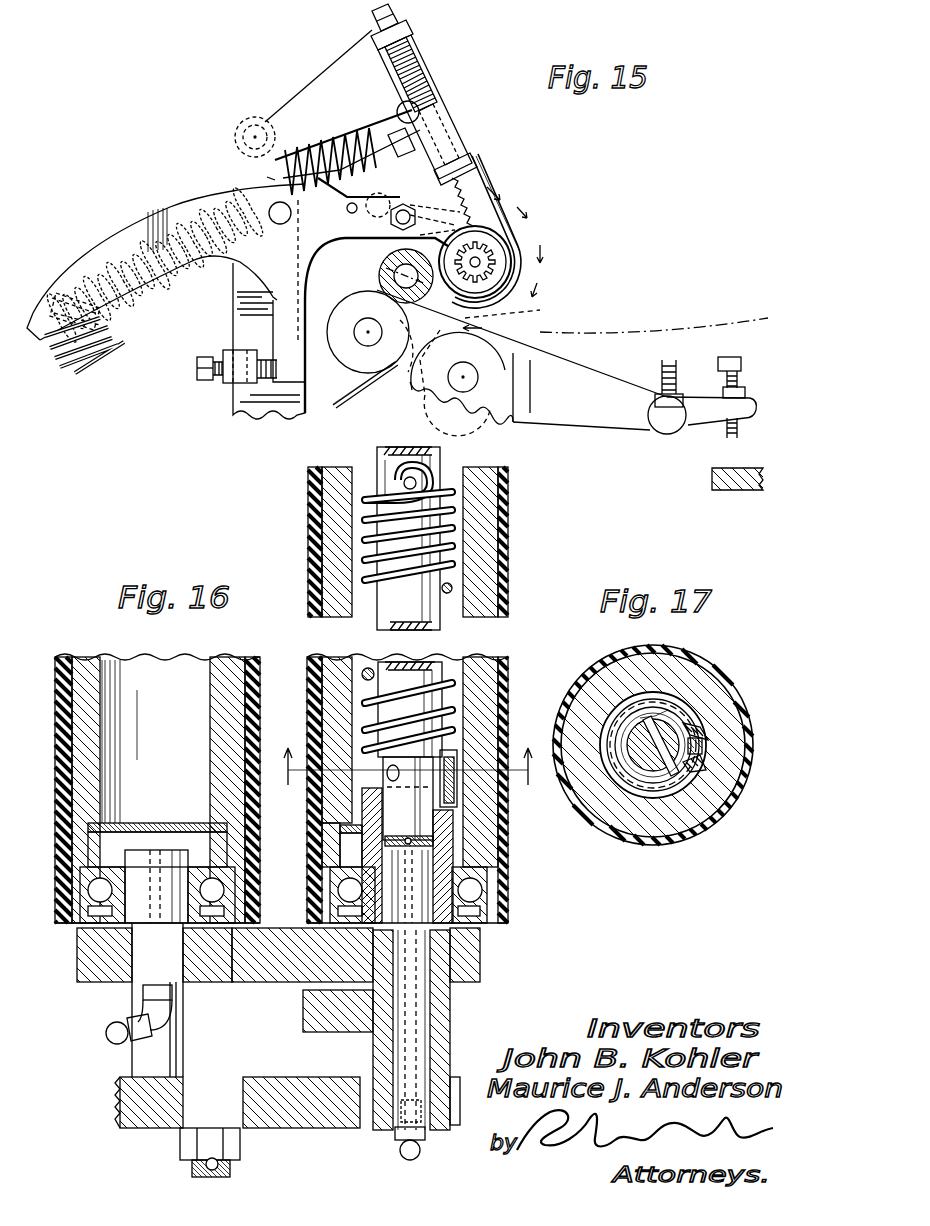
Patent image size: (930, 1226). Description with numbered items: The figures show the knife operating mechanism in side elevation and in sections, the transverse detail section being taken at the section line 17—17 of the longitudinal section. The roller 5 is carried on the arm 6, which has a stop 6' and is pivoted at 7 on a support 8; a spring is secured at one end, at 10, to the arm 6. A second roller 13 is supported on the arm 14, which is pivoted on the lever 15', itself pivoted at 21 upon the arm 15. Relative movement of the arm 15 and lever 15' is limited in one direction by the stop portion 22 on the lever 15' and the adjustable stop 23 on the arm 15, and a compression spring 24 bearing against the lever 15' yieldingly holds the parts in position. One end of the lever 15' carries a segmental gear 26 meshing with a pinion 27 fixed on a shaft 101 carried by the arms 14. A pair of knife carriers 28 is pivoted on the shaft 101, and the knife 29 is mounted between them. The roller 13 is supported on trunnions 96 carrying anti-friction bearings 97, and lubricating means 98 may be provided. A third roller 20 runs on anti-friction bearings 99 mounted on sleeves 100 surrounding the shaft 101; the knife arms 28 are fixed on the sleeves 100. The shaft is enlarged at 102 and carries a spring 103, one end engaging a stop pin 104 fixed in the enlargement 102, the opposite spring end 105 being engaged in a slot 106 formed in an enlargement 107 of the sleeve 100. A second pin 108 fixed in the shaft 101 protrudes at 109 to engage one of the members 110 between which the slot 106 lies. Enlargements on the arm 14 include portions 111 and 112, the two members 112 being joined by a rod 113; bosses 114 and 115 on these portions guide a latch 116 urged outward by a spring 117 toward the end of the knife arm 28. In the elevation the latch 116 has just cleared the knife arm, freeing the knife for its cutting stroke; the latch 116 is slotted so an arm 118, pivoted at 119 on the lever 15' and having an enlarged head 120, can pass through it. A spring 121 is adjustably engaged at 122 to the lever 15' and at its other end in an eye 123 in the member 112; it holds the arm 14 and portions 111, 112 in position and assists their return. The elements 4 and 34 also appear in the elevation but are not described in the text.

In FIG. 15, the roller 4 is at (384, 278).
In FIG. 15, the roller 5 is at (333, 317).
In FIG. 15, the arm 6 is at (566, 364).
In FIG. 15, the stop 6' is at (739, 467).
In FIG. 15, the pivot 7 is at (465, 374).
In FIG. 15, the support 8 is at (423, 413).
In FIG. 15, the spring attachment point 10 is at (667, 413).
In FIG. 15, the second roller 13 is at (356, 258).
In FIG. 16, the second roller 13 is at (87, 660).
In FIG. 15, the arm 14 is at (442, 240).
In FIG. 16, the arm 14 is at (280, 975).
In FIG. 15, the arm 15 is at (242, 341).
In FIG. 15, the lever 15' is at (166, 257).
In FIG. 16, the lever 15' is at (200, 1102).
In FIG. 16, the section line 17 is at (288, 786).
In FIG. 16, the third roller 20 is at (508, 578).
In FIG. 17, the third roller 20 is at (732, 807).
In FIG. 15, the pivot 21 is at (276, 226).
In FIG. 15, the stop portion 22 is at (320, 378).
In FIG. 15, the adjustable stop 23 is at (217, 377).
In FIG. 15, the compression spring 24 is at (78, 375).
In FIG. 15, the segmental gear 26 is at (463, 187).
In FIG. 16, the segmental gear 26 is at (352, 1115).
In FIG. 15, the pinion 27 is at (512, 258).
In FIG. 16, the pinion 27 is at (443, 1125).
In FIG. 15, the knife carrier 28 is at (482, 226).
In FIG. 16, the knife carrier 28 is at (325, 1022).
In FIG. 15, the knife 29 is at (480, 181).
In FIG. 15, the bar 34 is at (490, 160).
In FIG. 16, the trunnion 96 is at (155, 853).
In FIG. 16, the anti-friction bearing 97 is at (98, 887).
In FIG. 16, the lubricating means 98 is at (107, 1030).
In FIG. 16, the anti-friction bearing 99 is at (500, 920).
In FIG. 16, the sleeve 100 is at (482, 948).
In FIG. 16, the shaft 101 is at (420, 1046).
In FIG. 17, the shaft 101 is at (630, 662).
In FIG. 16, the shaft enlargement 102 is at (418, 677).
In FIG. 16, the spring 103 is at (447, 541).
In FIG. 17, the spring 103 is at (653, 772).
In FIG. 16, the stop pin 104 is at (412, 480).
In FIG. 16, the spring end 105 is at (455, 772).
In FIG. 17, the spring end 105 is at (700, 745).
In FIG. 16, the slot 106 is at (457, 805).
In FIG. 17, the slot 106 is at (672, 707).
In FIG. 16, the sleeve enlargement 107 is at (448, 842).
In FIG. 17, the sleeve enlargement 107 is at (695, 840).
In FIG. 16, the second pin 108 is at (390, 775).
In FIG. 17, the second pin 108 is at (642, 755).
In FIG. 16, the protruding pin end 109 is at (367, 668).
In FIG. 17, the protruding pin end 109 is at (648, 790).
In FIG. 17, the member 110 is at (694, 721).
In FIG. 15, the portion 111 is at (398, 147).
In FIG. 15, the portion 112 is at (306, 76).
In FIG. 15, the rod 113 is at (240, 118).
In FIG. 15, the boss 114 is at (410, 27).
In FIG. 15, the boss 115 is at (440, 173).
In FIG. 15, the latch 116 is at (445, 113).
In FIG. 15, the spring 117 is at (430, 58).
In FIG. 15, the arm 118 is at (390, 190).
In FIG. 15, the pivot 119 is at (365, 240).
In FIG. 15, the enlarged head 120 is at (412, 147).
In FIG. 15, the spring 121 is at (267, 177).
In FIG. 15, the adjustable spring anchorage 122 is at (78, 290).
In FIG. 15, the eye 123 is at (400, 108).